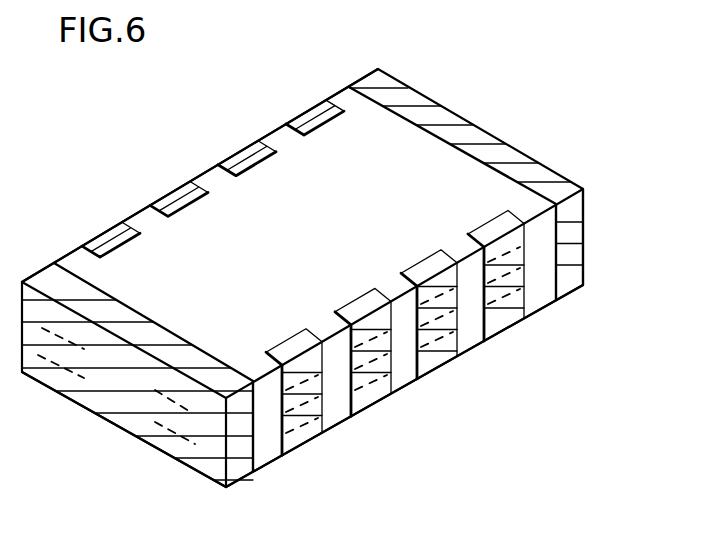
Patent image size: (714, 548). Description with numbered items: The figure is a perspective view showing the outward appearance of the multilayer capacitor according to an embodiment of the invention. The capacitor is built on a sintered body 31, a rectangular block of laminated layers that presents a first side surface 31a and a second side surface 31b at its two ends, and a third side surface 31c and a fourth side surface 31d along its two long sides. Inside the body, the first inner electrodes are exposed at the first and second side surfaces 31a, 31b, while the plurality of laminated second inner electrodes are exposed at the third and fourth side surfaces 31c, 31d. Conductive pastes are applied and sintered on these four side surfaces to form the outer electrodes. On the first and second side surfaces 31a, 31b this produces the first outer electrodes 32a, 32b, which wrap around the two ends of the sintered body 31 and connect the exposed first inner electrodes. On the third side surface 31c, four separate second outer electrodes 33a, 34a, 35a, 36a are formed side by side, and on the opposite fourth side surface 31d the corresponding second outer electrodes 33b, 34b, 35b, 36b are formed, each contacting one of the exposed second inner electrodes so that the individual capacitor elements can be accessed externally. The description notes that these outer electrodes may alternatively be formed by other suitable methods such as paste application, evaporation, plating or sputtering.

The sintered body 31 is at (346, 86).
The first side surface 31a is at (118, 420).
The second side surface 31b is at (584, 242).
The third side surface 31c is at (268, 135).
The fourth side surface 31d is at (473, 346).
The first outer electrode 32a is at (85, 400).
The first outer electrode 32b is at (508, 144).
The second outer electrode 33a is at (107, 234).
The second outer electrode 34a is at (174, 190).
The second outer electrode 35a is at (240, 158).
The second outer electrode 36a is at (310, 120).
The second outer electrode 33b is at (303, 447).
The second outer electrode 34b is at (367, 404).
The second outer electrode 35b is at (437, 372).
The second outer electrode 36b is at (517, 325).